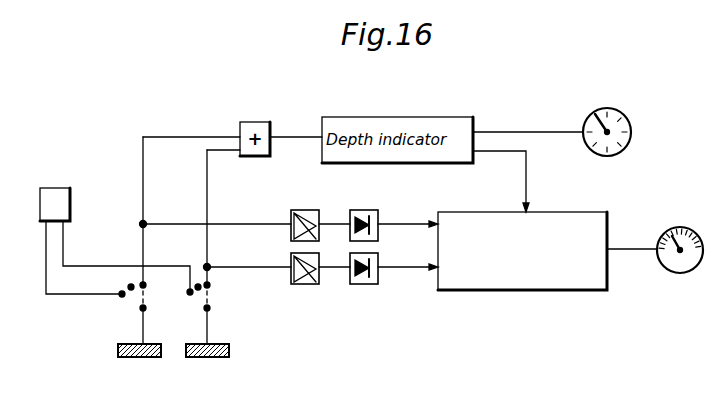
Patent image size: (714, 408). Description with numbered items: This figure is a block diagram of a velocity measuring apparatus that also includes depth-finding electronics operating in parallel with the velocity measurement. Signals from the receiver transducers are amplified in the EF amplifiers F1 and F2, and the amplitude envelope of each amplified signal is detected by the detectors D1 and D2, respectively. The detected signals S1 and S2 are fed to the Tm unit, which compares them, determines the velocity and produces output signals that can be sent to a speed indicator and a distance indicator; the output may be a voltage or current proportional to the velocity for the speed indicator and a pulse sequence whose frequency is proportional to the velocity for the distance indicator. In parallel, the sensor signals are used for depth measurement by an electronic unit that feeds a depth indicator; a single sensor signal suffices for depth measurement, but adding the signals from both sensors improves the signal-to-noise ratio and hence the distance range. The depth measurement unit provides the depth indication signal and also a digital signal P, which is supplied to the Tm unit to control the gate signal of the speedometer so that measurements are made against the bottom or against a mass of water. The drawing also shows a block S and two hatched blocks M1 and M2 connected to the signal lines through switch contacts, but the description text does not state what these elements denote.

The switch / selector S is at (55, 204).
The first motor M1 is at (216, 360).
The second motor M2 is at (150, 360).
The EF amplifier F1 is at (310, 279).
The EF amplifier F2 is at (308, 213).
The detector D1 is at (368, 284).
The detector D2 is at (362, 213).
The signal S1 is at (408, 258).
The signal S2 is at (408, 214).
The digital signal P is at (528, 173).
The Tm unit Tm is at (522, 251).